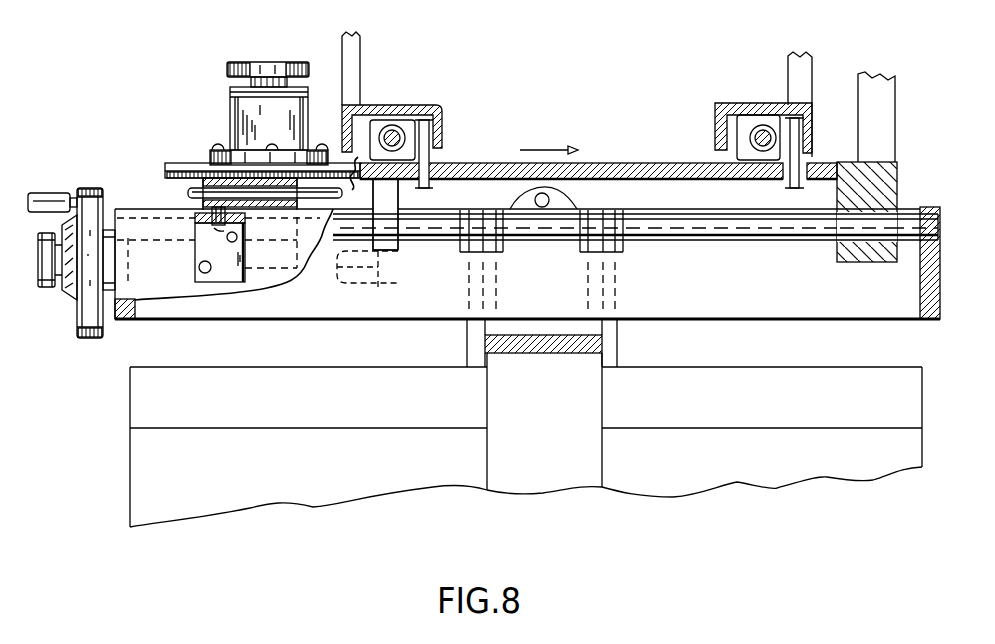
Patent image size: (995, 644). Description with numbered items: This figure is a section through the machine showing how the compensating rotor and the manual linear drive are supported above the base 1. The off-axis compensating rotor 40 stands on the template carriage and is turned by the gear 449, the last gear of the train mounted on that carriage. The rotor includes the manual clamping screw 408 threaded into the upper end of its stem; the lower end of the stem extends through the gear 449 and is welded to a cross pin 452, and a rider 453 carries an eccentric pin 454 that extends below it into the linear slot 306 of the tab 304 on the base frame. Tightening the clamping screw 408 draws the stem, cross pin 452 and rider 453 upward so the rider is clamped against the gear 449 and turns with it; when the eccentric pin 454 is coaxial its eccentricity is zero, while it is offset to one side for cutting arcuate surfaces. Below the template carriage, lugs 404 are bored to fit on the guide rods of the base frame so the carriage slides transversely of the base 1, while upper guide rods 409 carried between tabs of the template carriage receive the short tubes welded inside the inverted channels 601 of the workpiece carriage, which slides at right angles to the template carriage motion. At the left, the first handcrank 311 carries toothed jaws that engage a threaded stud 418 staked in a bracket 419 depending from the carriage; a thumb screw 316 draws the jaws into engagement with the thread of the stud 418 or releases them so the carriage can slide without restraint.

The base 1 is at (667, 474).
The off-axis compensating rotor 40 is at (227, 109).
The manual clamping screw 408 is at (271, 63).
The rider 453 is at (200, 164).
The gear 449 is at (166, 174).
The cross pin 452 is at (190, 192).
The first handcrank 311 is at (87, 188).
The thumb screw 316 is at (51, 289).
The tab 304 is at (196, 219).
The linear slot 306 is at (216, 232).
The eccentric pin 454 is at (224, 236).
The inverted channels 601 is at (400, 104).
The upper guide rods 409 is at (404, 137).
The lugs 404 is at (882, 188).
The threaded stud 418 is at (372, 275).
The bracket 419 is at (398, 256).